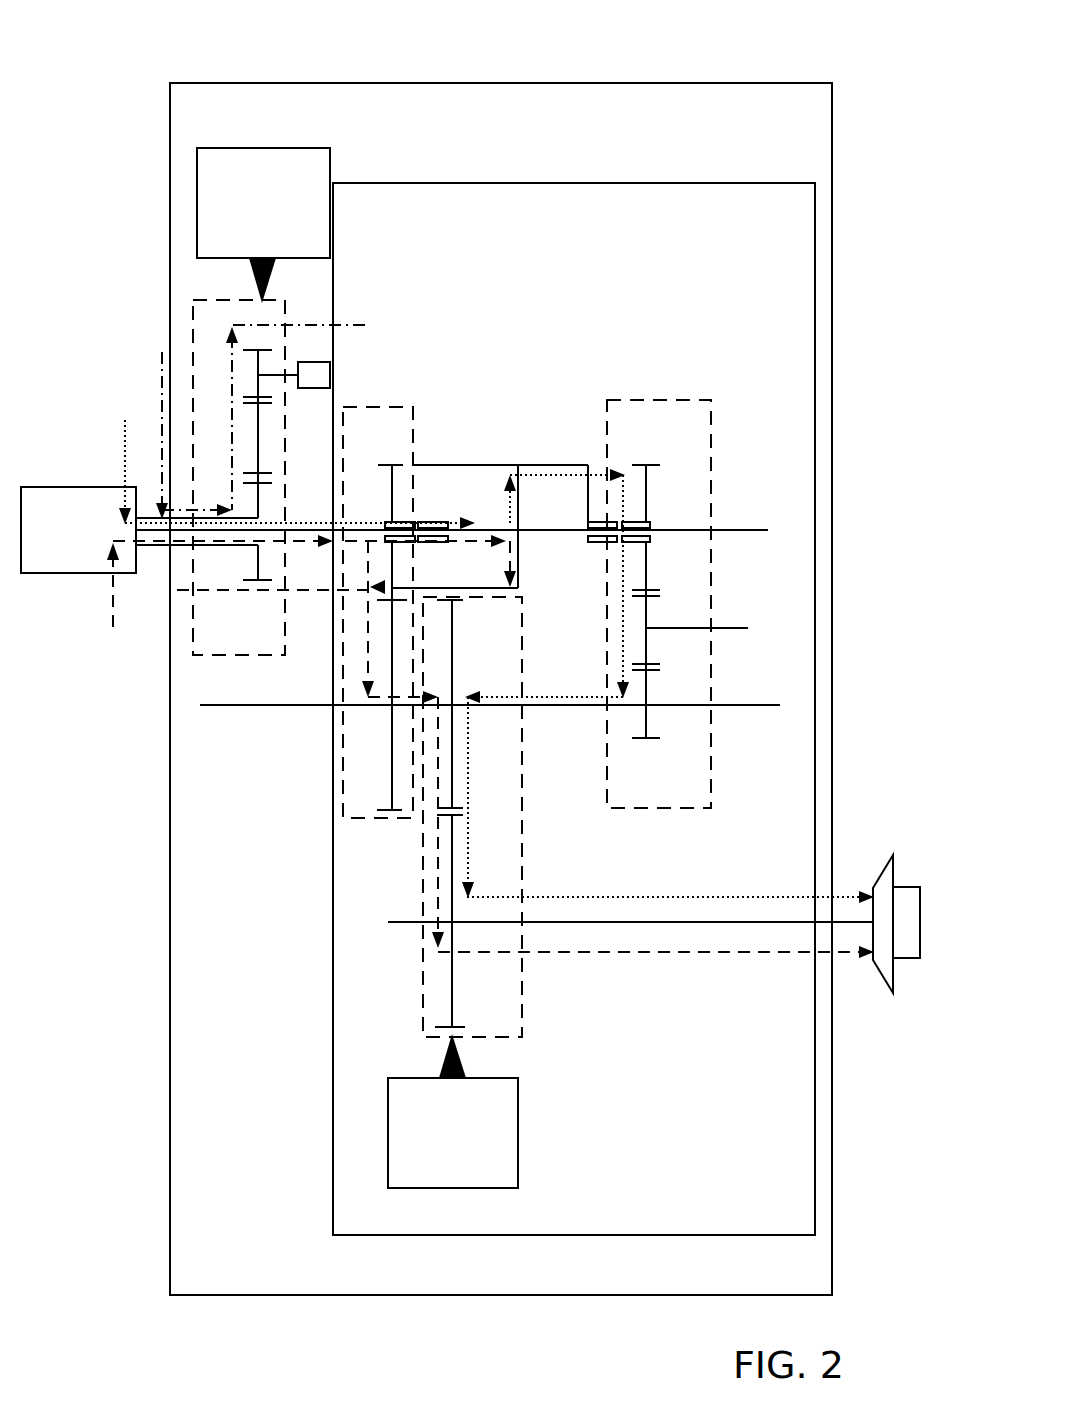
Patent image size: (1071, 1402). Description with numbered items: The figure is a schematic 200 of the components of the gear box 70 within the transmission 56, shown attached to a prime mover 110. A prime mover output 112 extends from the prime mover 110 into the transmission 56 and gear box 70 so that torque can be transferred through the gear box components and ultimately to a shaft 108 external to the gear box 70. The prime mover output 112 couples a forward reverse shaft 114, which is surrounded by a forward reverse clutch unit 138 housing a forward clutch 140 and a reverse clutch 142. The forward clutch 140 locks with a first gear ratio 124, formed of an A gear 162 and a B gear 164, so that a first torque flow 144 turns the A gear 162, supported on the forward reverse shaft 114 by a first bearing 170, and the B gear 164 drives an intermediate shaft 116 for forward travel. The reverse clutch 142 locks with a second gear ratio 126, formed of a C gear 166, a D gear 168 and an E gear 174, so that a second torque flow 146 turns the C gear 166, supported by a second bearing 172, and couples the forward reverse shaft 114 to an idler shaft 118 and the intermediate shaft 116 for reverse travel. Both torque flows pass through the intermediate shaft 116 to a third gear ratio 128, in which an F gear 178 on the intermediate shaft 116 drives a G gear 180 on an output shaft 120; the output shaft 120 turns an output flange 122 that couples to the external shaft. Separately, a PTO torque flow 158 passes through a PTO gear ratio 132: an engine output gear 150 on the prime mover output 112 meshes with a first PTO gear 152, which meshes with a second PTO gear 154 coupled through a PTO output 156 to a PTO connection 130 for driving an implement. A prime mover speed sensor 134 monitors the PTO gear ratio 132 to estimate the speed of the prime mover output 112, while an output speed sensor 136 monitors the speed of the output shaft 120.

The schematic 200 is at (143, 36).
The transmission 56 is at (652, 66).
The gear box 70 is at (626, 243).
The shaft 108 is at (907, 960).
The prime mover 110 is at (78, 530).
The prime mover output 112 is at (163, 546).
The forward reverse shaft 114 is at (735, 529).
The intermediate shaft 116 is at (744, 704).
The idler shaft 118 is at (722, 627).
The output shaft 120 is at (406, 921).
The output flange 122 is at (893, 862).
The first gear ratio 124 is at (389, 398).
The second gear ratio 126 is at (654, 390).
The third gear ratio 128 is at (538, 808).
The PTO connection 130 is at (330, 364).
The PTO gear ratio 132 is at (205, 292).
The prime mover speed sensor 134 is at (263, 225).
The output speed sensor 136 is at (453, 1111).
The forward reverse clutch unit 138 is at (519, 450).
The forward clutch 140 is at (448, 464).
The reverse clutch 142 is at (590, 465).
The first torque flow 144 is at (113, 630).
The second torque flow 146 is at (125, 420).
The engine output gear 150 is at (256, 582).
The first PTO gear 152 is at (265, 432).
The second PTO gear 154 is at (268, 388).
The PTO output 156 is at (274, 374).
The PTO torque flow 158 is at (160, 352).
The A gear 162 is at (400, 462).
The B gear 164 is at (393, 812).
The C gear 166 is at (650, 465).
The D gear 168 is at (648, 641).
The first bearing 170 is at (422, 521).
The second bearing 172 is at (602, 521).
The E gear 174 is at (641, 741).
The F gear 178 is at (452, 680).
The G gear 180 is at (452, 865).